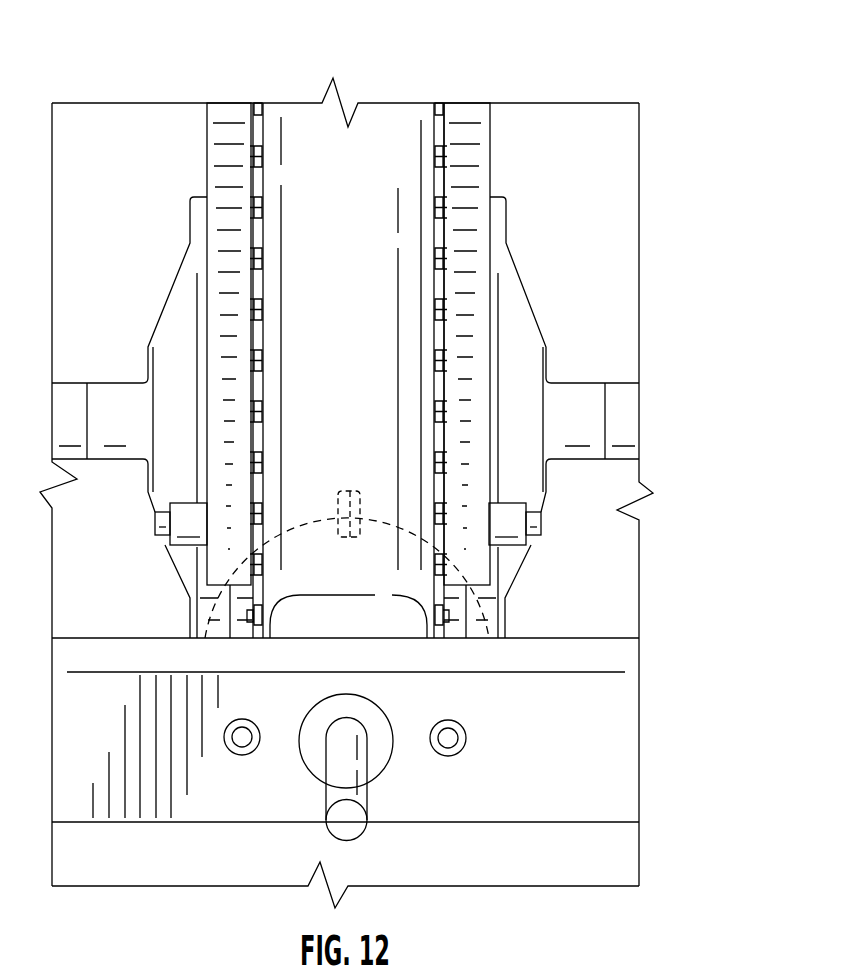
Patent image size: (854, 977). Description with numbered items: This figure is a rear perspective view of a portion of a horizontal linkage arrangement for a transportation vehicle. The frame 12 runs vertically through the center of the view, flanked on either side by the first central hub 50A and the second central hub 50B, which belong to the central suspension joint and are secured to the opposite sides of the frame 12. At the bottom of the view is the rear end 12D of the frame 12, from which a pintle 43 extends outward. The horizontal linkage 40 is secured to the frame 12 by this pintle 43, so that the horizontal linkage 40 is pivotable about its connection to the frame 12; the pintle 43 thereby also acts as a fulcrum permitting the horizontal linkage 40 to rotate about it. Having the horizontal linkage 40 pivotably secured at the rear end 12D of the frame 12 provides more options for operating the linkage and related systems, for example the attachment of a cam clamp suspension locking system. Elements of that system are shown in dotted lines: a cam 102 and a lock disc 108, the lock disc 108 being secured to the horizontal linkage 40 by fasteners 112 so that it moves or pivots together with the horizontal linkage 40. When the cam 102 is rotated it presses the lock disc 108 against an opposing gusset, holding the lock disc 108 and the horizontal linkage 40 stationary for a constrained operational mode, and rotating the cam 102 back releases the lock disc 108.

The frame 12 is at (398, 130).
The first central hub 50A is at (207, 170).
The second central hub 50B is at (490, 177).
The cam 102 is at (360, 500).
The lock disc 108 is at (410, 528).
The rear end 12D is at (398, 608).
The horizontal linkage 40 is at (597, 652).
The fastener 112 is at (233, 753).
The pintle 43 is at (363, 830).